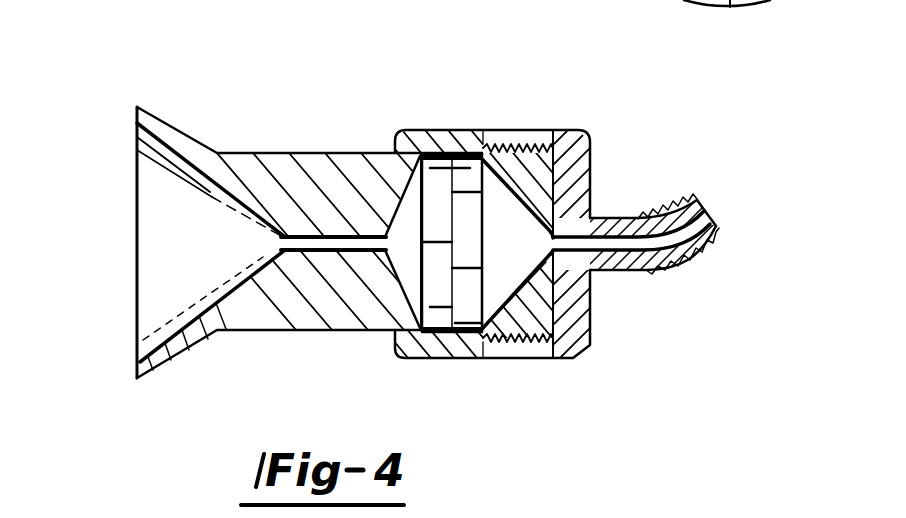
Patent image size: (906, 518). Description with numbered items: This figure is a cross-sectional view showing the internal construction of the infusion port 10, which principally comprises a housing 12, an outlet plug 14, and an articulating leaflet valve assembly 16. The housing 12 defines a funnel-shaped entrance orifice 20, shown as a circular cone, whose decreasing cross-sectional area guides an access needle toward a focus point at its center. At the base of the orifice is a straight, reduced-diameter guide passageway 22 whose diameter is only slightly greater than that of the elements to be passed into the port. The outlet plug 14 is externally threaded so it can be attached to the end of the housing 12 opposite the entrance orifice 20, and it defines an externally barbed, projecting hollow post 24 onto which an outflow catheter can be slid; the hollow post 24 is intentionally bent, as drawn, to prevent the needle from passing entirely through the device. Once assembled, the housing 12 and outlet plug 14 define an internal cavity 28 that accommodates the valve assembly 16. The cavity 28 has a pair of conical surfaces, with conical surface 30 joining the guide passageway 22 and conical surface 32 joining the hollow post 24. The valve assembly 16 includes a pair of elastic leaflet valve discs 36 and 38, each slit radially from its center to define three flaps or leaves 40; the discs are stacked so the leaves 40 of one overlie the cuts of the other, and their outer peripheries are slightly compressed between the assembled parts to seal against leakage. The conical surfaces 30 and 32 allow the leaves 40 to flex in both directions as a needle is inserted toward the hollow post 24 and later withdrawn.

The infusion port 10 is at (316, 62).
The housing 12 is at (447, 151).
The outlet plug 14 is at (597, 196).
The leaflet valve assembly 16 is at (485, 143).
The entrance orifice 20 is at (167, 338).
The guide passageway 22 is at (315, 246).
The hollow post 24 is at (705, 204).
The cavity 28 is at (499, 278).
The conical surface 30 is at (407, 320).
The conical surface 32 is at (580, 175).
The elastic leaflet valve disc 36 is at (430, 152).
The elastic leaflet valve disc 38 is at (567, 175).
The leaves 40 is at (788, 0).